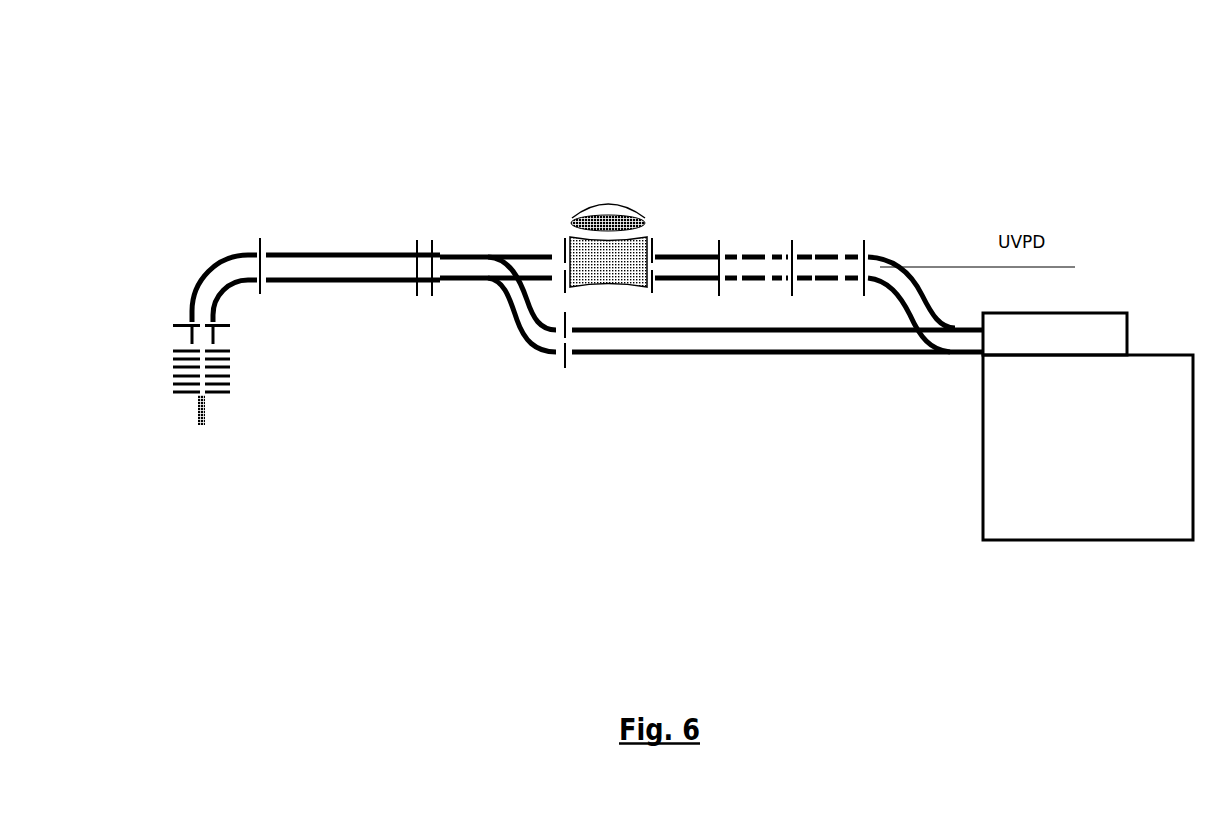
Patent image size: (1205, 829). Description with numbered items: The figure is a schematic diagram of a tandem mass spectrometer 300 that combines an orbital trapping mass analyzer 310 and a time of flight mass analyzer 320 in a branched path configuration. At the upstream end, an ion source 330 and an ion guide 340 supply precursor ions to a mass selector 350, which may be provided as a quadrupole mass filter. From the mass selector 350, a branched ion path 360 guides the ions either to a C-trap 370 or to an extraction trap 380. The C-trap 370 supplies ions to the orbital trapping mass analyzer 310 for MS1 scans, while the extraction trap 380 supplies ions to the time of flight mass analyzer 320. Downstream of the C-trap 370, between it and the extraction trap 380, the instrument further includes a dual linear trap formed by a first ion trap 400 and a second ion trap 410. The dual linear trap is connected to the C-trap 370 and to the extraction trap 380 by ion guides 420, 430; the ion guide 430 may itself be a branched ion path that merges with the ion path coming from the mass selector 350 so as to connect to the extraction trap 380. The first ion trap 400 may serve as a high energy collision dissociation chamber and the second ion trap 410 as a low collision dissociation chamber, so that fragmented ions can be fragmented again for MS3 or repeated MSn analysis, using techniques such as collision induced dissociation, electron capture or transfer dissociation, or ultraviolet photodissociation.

The tandem mass spectrometer 300 is at (423, 229).
The orbital trapping mass analyzer 310 is at (590, 205).
The time of flight mass analyzer 320 is at (1063, 542).
The ion source 330 is at (237, 393).
The ion guide 340 is at (226, 255).
The mass selector 350 is at (316, 248).
The branched ion path 360 is at (488, 257).
The C-trap 370 is at (655, 254).
The extraction trap 380 is at (1087, 313).
The first ion trap 400 is at (778, 250).
The second ion trap 410 is at (850, 250).
The ion guide 420 is at (698, 280).
The ion guide 430 is at (950, 350).